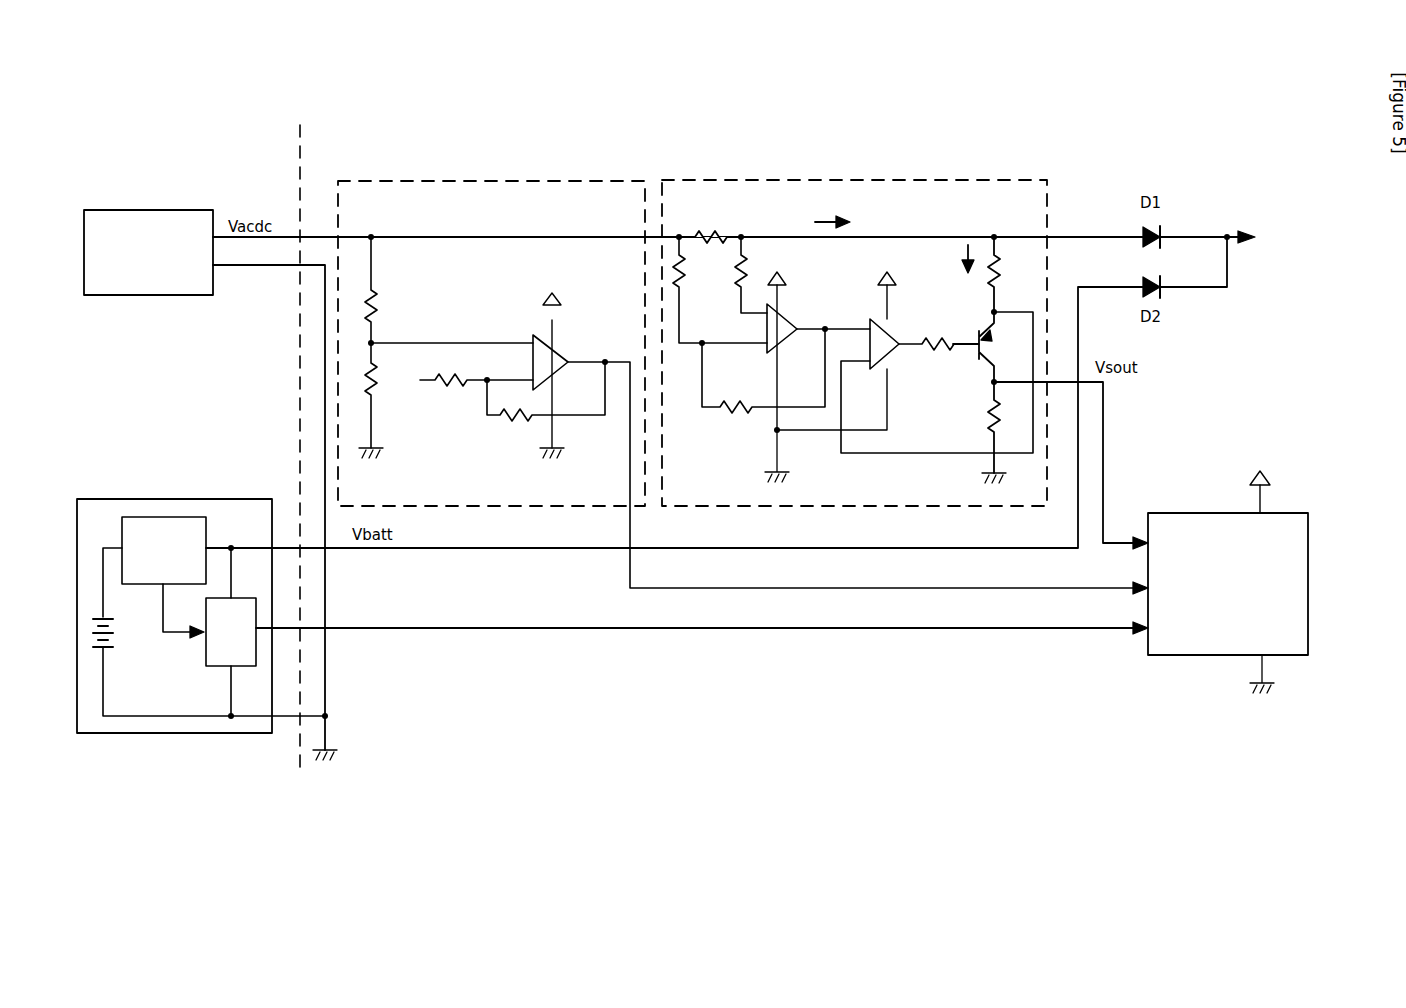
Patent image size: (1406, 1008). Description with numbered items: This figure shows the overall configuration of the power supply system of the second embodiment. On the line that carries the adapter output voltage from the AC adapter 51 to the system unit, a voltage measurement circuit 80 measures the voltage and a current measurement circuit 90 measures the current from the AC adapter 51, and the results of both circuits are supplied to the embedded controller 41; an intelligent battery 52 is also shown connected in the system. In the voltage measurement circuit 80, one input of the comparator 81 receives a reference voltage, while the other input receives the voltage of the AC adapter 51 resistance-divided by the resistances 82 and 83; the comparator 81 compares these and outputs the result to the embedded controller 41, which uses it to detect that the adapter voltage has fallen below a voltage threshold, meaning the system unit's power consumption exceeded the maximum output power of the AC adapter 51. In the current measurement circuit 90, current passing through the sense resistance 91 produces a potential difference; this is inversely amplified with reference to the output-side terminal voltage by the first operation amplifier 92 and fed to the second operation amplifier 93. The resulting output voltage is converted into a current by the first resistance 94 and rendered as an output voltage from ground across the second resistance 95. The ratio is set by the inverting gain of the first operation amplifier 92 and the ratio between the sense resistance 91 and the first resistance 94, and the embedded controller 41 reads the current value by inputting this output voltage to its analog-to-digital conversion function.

The embedded controller 41 is at (1203, 655).
The AC adapter 51 is at (160, 210).
The intelligent battery 52 is at (215, 499).
The voltage measurement circuit 80 is at (588, 181).
The comparator (CMP3) 81 is at (533, 340).
The resistance 82 is at (378, 303).
The resistance 83 is at (378, 385).
The current measurement circuit 90 is at (907, 180).
The resistance (Rs) 91 is at (725, 232).
The operation amplifier (AMP 1) 92 is at (783, 322).
The operation amplifier (AMP 2) 93 is at (903, 354).
The resistance (R1) 94 is at (1002, 278).
The resistance (R2) 95 is at (996, 436).